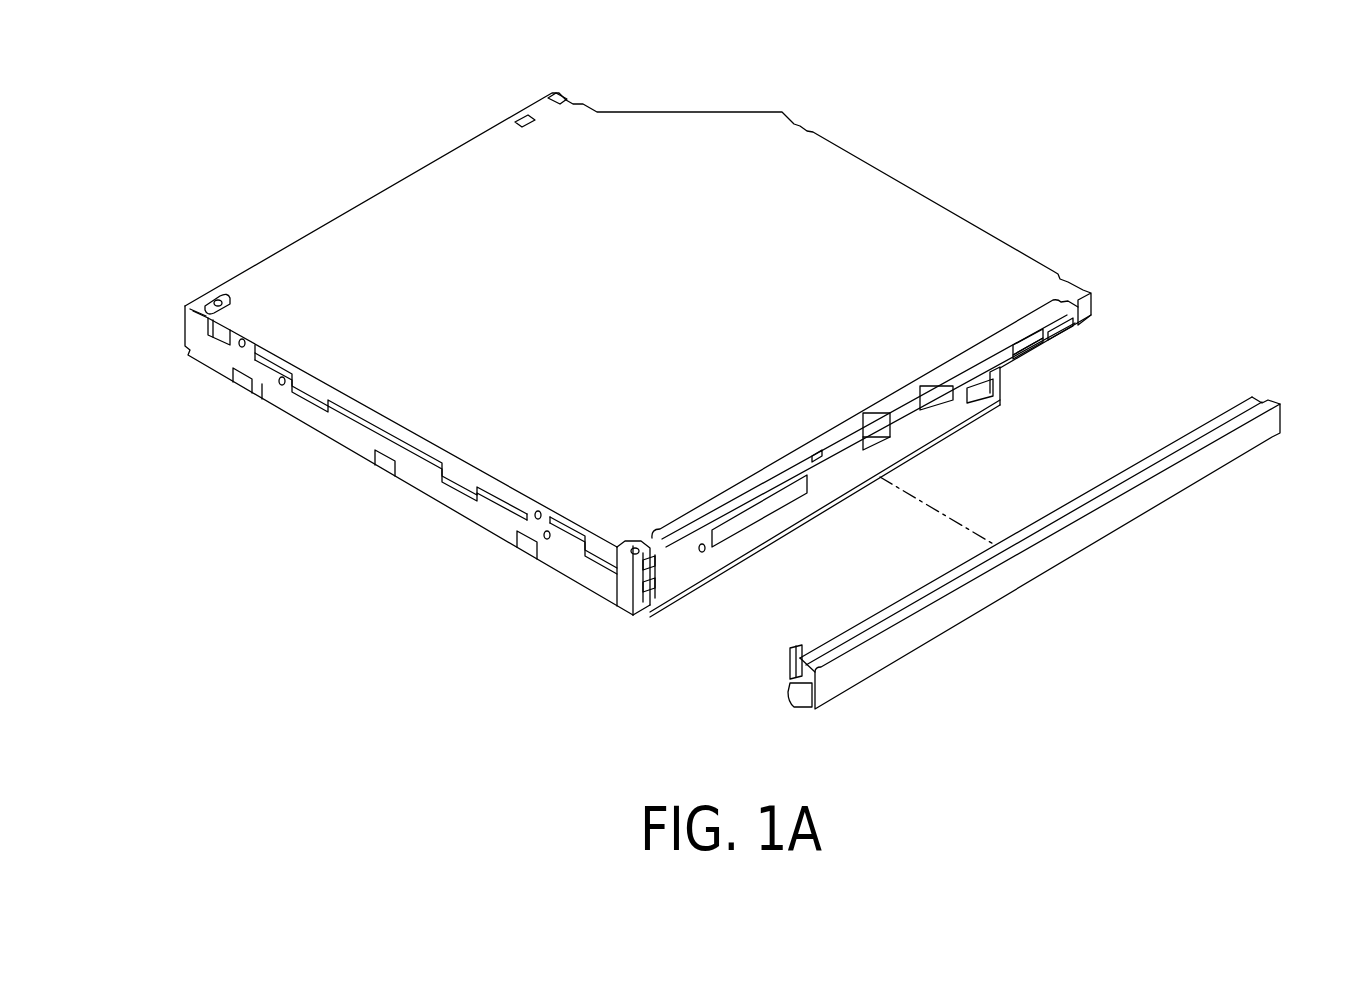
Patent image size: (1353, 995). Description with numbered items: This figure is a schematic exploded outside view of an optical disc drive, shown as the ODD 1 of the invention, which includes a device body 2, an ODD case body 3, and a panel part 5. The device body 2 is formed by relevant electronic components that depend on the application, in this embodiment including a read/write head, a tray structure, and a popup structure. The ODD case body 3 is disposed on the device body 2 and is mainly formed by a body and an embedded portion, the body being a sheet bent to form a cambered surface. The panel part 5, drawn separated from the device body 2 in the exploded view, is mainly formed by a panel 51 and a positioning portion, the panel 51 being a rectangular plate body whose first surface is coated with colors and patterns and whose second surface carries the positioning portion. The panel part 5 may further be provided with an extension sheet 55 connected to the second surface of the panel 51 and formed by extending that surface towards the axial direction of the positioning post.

The ODD 1 is at (1076, 70).
The device body 2 is at (955, 212).
The ODD case body 3 is at (775, 712).
The panel part 5 is at (1022, 597).
The panel 51 is at (1072, 540).
The extension sheet 55 is at (1167, 452).